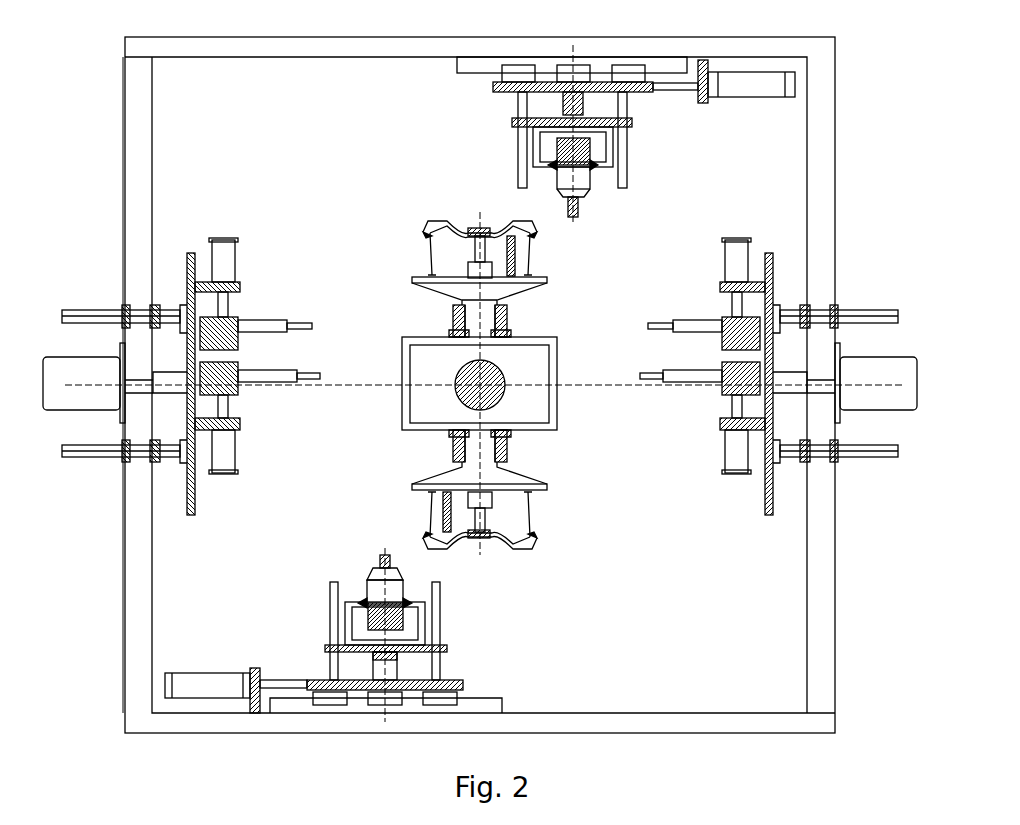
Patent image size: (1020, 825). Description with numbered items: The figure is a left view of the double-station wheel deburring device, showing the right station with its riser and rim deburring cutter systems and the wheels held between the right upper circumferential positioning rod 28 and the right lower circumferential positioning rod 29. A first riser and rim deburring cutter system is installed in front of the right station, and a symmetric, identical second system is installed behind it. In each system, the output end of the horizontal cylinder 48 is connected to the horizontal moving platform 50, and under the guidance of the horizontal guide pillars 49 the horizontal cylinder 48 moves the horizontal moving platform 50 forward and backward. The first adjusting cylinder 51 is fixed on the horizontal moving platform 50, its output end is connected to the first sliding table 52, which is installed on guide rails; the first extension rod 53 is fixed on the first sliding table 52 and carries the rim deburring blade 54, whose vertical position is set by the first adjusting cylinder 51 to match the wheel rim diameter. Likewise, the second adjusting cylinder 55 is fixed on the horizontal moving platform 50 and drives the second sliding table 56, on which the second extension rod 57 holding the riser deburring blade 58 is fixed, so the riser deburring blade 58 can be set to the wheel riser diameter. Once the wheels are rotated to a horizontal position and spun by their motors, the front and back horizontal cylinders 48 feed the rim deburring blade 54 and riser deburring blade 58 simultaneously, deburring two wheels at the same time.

The right upper circumferential positioning rod 28 is at (510, 265).
The right lower circumferential positioning rod 29 is at (443, 532).
The horizontal cylinder 48 is at (885, 385).
The horizontal guide pillar 49 is at (887, 315).
The horizontal moving platform 50 is at (773, 272).
The first adjusting cylinder 51 is at (737, 270).
The first sliding table 52 is at (727, 317).
The first extension rod 53 is at (700, 330).
The rim deburring blade 54 is at (670, 325).
The second adjusting cylinder 55 is at (738, 438).
The second sliding table 56 is at (725, 400).
The second extension rod 57 is at (700, 372).
The riser deburring blade 58 is at (667, 377).